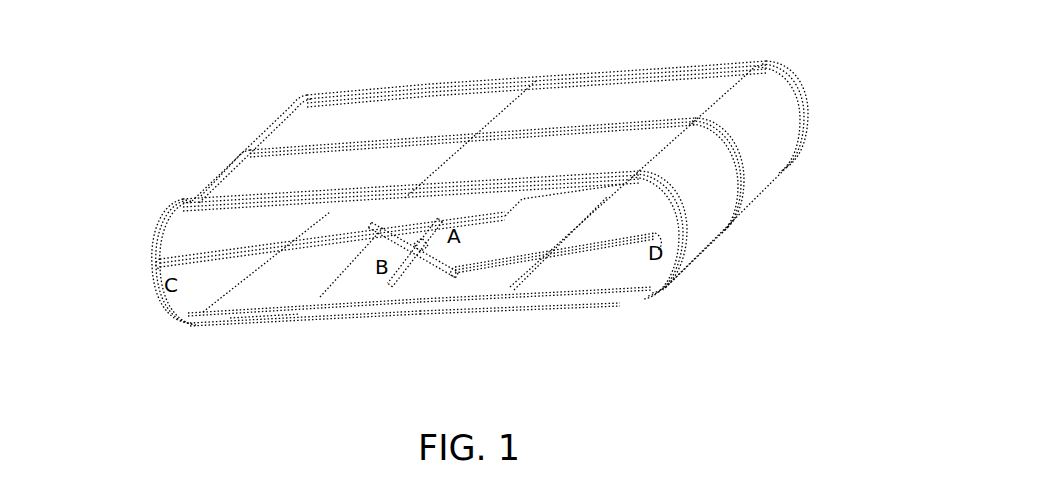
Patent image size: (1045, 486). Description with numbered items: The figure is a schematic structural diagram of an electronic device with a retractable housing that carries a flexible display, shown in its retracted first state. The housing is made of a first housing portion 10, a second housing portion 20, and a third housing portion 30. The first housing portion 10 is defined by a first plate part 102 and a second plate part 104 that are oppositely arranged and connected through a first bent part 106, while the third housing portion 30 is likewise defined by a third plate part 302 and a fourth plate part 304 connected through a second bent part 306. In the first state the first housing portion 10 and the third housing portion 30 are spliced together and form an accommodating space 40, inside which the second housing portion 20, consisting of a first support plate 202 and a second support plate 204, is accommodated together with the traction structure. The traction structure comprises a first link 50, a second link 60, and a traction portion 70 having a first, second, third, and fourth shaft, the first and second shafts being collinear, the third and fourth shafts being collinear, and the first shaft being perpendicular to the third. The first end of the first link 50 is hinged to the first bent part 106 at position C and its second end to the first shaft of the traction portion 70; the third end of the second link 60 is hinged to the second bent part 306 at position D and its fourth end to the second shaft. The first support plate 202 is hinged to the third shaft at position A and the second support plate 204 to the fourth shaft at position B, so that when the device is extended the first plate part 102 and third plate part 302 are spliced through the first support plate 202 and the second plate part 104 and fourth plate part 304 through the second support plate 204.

The first housing portion 10 is at (90, 185).
The first plate part 102 is at (238, 193).
The second plate part 104 is at (243, 313).
The first bent part 106 is at (160, 258).
The second housing portion 20 is at (390, 366).
The first support plate 202 is at (333, 222).
The second support plate 204 is at (381, 292).
The third housing portion 30 is at (855, 136).
The third plate part 302 is at (640, 148).
The fourth plate part 304 is at (595, 276).
The second bent part 306 is at (722, 205).
The accommodating space 40 is at (263, 296).
The first link 50 is at (268, 248).
The second link 60 is at (611, 242).
The traction portion 70 is at (428, 240).